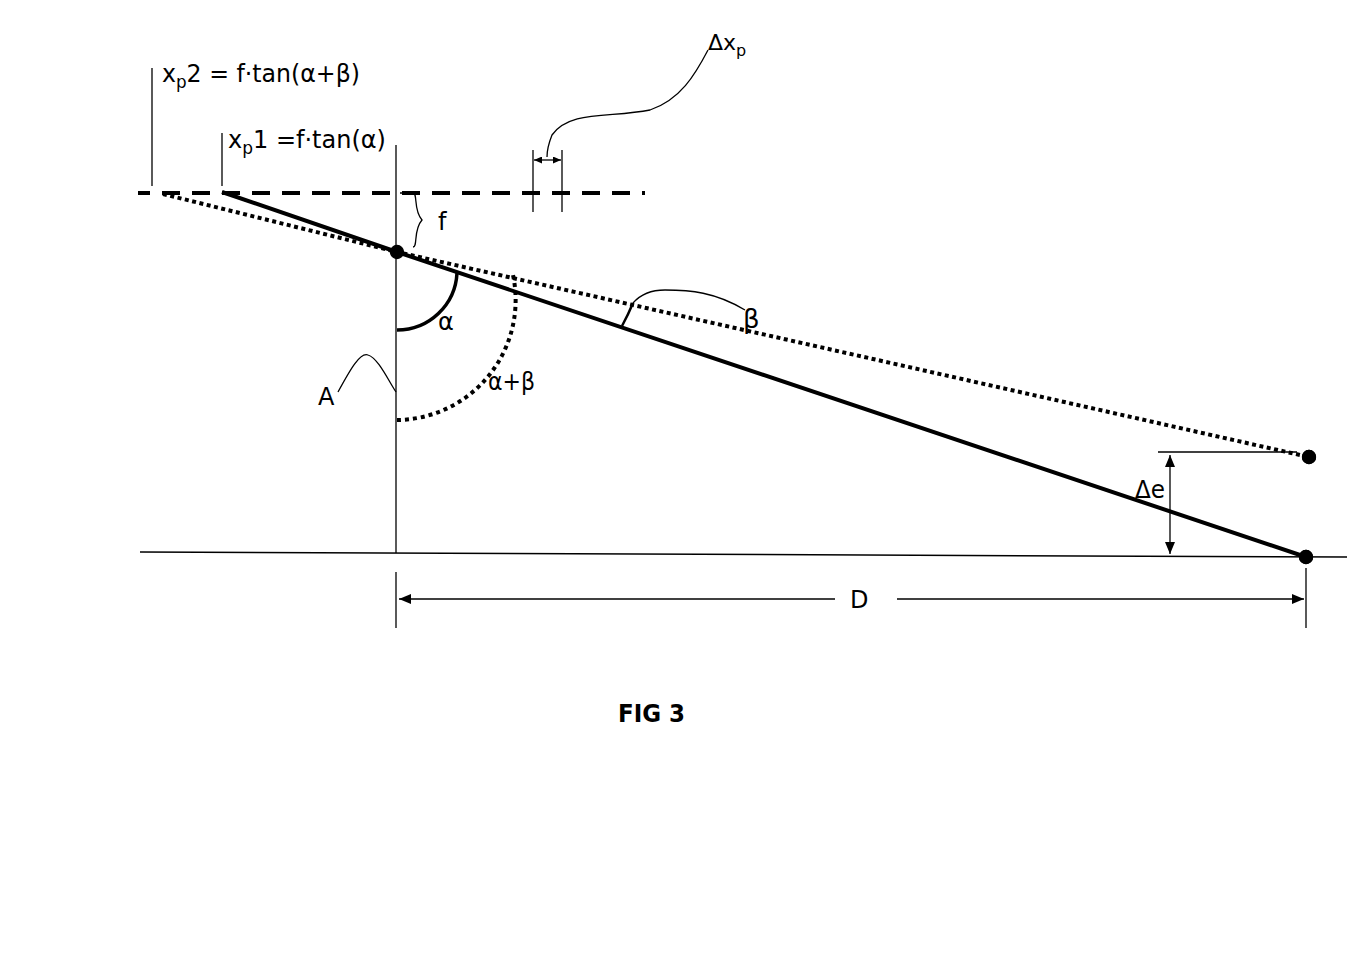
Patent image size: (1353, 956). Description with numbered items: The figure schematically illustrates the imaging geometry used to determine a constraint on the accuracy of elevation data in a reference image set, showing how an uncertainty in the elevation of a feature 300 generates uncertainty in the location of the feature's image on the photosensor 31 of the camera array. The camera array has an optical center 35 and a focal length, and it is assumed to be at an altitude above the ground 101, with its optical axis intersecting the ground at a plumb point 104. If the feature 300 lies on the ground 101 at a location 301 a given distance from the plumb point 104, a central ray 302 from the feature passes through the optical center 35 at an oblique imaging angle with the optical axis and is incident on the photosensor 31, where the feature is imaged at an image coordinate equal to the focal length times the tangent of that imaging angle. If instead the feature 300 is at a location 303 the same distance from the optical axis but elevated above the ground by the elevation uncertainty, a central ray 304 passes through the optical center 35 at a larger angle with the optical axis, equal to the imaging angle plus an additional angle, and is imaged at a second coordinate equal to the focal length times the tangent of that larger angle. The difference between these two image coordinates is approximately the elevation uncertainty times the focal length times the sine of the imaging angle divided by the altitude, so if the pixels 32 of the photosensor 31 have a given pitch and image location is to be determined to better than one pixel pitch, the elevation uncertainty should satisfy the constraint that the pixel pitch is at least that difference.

The photosensor 31 is at (623, 178).
The pixels 32 is at (453, 192).
The optical center 35 is at (390, 253).
The ground 101 is at (710, 555).
The plumb point 104 is at (395, 553).
The feature 300 is at (1310, 556).
The location 301 is at (1300, 552).
The central ray 302 is at (840, 402).
The location 303 is at (1300, 453).
The central ray 304 is at (943, 375).